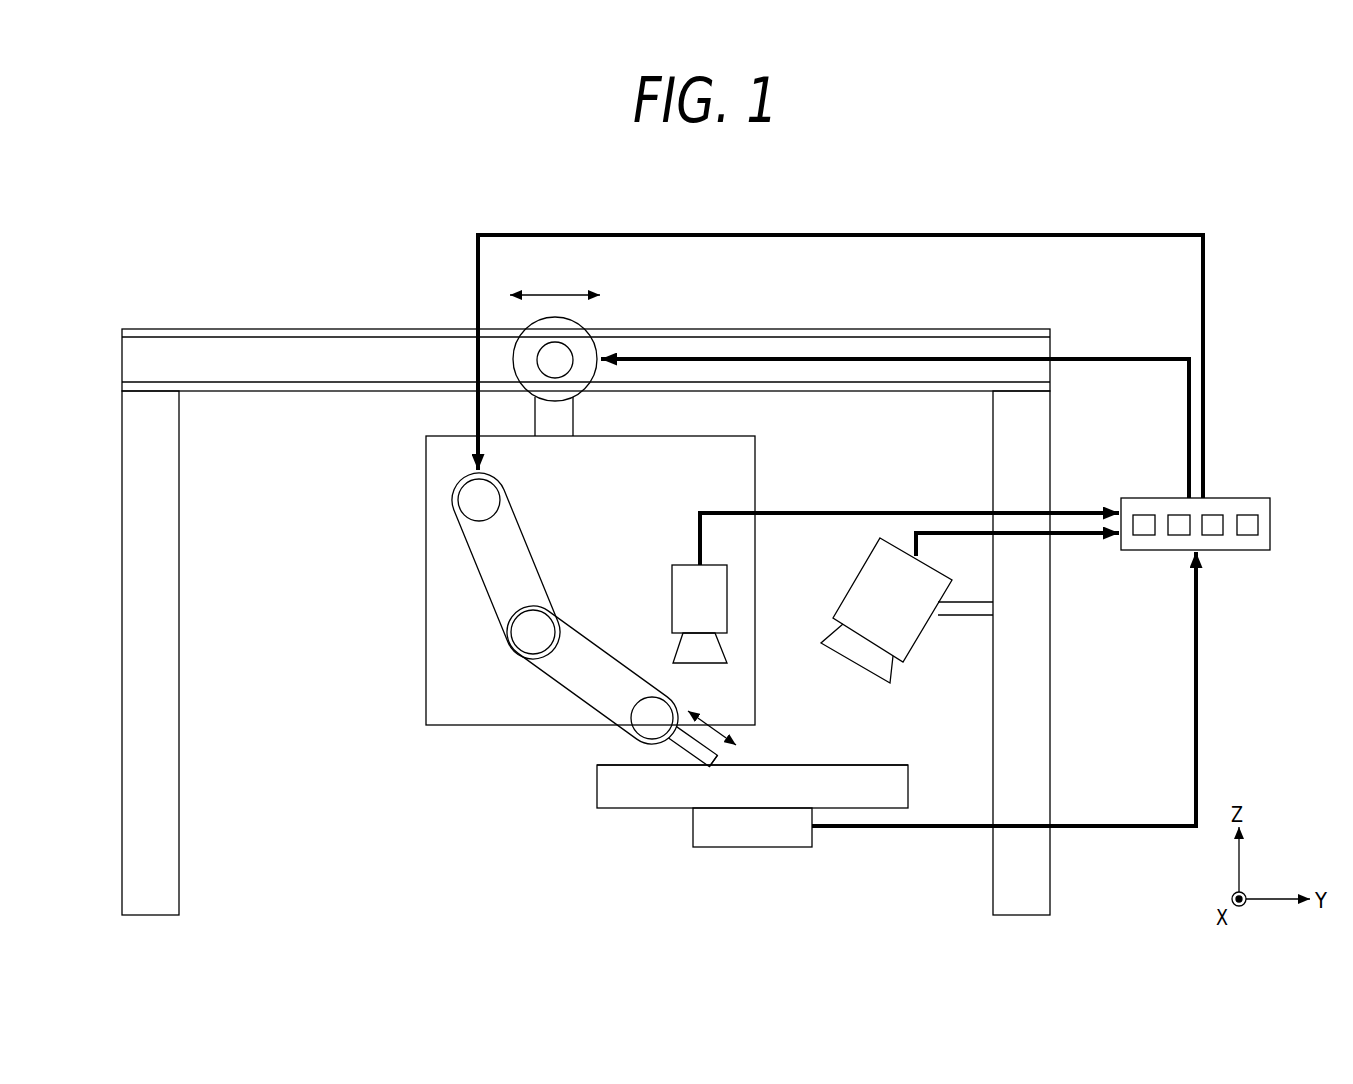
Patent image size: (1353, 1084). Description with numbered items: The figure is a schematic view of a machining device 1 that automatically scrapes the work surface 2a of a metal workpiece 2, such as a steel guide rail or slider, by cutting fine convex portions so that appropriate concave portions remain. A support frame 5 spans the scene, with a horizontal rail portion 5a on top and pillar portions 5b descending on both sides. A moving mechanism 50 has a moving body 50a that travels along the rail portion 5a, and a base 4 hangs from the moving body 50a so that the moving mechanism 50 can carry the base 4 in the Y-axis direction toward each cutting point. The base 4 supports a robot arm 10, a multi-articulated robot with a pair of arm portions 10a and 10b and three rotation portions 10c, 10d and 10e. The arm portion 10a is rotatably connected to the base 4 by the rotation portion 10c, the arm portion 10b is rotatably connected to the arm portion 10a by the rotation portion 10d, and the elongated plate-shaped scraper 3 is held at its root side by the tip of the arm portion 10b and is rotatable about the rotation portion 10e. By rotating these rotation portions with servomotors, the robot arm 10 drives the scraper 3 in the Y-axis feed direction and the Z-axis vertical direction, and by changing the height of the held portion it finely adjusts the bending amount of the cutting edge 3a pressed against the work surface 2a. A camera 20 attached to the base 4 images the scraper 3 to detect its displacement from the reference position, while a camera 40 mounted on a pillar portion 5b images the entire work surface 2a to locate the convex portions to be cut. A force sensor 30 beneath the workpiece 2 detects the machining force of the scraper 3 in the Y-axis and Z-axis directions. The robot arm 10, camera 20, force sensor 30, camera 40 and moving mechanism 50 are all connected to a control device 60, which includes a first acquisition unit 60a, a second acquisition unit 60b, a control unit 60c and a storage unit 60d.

The machining device 1 is at (1247, 204).
The support frame 5 is at (587, 585).
The rail portion 5a is at (393, 345).
The pillar portion 5b is at (148, 665).
The moving mechanism 50 is at (581, 365).
The moving body 50a is at (560, 362).
The base 4 is at (424, 665).
The robot arm 10 is at (565, 619).
The arm portion 10a is at (512, 565).
The arm portion 10b is at (590, 660).
The rotation portion 10c is at (485, 496).
The rotation portion 10d is at (531, 637).
The rotation portion 10e is at (645, 725).
The scraper 3 is at (669, 777).
The cutting edge 3a is at (710, 763).
The camera 20 is at (666, 582).
The camera 40 is at (927, 632).
The workpiece 2 is at (772, 757).
The work surface 2a is at (808, 765).
The force sensor 30 is at (755, 849).
The control device 60 is at (1201, 518).
The first acquisition unit 60a is at (1143, 527).
The second acquisition unit 60b is at (1180, 527).
The control unit 60c is at (1213, 527).
The storage unit 60d is at (1247, 527).